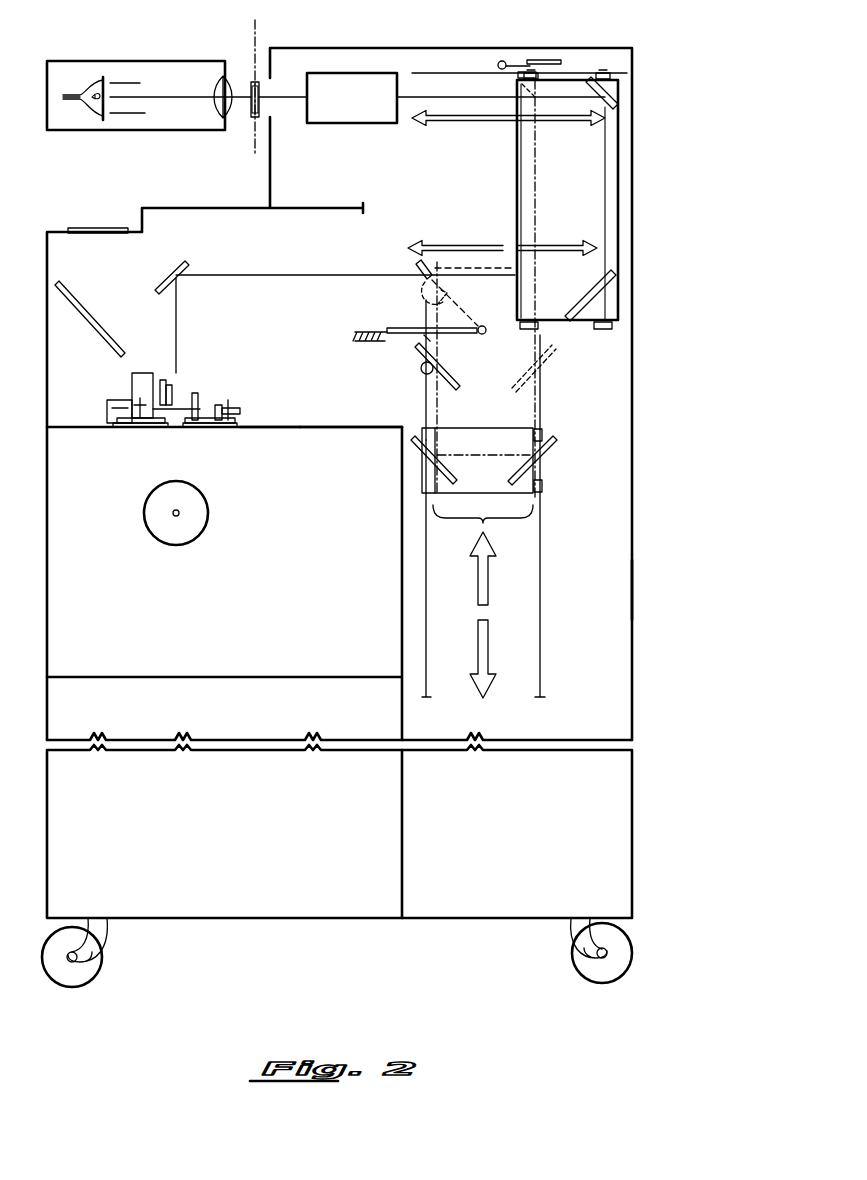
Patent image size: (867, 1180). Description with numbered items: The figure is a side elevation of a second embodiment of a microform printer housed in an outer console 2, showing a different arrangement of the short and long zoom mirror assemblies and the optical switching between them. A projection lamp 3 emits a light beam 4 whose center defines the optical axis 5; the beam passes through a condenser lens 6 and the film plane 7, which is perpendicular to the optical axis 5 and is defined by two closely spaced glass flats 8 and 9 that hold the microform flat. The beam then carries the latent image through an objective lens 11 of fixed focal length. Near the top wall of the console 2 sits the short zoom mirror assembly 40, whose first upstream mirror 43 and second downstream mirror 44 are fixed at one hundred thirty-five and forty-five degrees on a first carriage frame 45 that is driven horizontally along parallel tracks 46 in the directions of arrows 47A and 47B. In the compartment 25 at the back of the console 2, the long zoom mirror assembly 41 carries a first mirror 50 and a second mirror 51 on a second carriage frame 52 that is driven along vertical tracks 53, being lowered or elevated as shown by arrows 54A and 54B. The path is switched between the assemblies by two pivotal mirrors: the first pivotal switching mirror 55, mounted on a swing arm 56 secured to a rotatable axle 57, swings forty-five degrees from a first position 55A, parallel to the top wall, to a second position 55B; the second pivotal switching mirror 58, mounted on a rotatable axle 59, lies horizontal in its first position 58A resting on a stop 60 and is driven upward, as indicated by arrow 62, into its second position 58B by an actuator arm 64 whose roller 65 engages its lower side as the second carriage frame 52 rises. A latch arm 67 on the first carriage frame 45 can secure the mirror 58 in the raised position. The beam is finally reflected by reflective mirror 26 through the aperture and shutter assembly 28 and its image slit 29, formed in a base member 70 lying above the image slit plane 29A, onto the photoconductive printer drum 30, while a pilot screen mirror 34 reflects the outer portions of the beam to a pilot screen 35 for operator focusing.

The console 2 is at (632, 684).
The projection lamp 3 is at (103, 80).
The light beam 4 is at (129, 108).
The optical axis 5 is at (183, 97).
The condenser lens 6 is at (218, 86).
The film plane 7 is at (258, 28).
The glass flat 8 is at (246, 108).
The glass flat 9 is at (262, 108).
The objective lens 11 is at (356, 125).
The compartment 25 is at (632, 585).
The reflective mirror 26 is at (160, 272).
The aperture and shutter assembly 28 is at (208, 380).
The image slit 29 is at (185, 430).
The image slit plane 29A is at (273, 430).
The photoconductive printer drum 30 is at (210, 513).
The pilot screen mirror 34 is at (100, 340).
The pilot screen 35 is at (93, 228).
The short zoom mirror assembly 40 is at (642, 175).
The long zoom mirror assembly 41 is at (556, 395).
The first upstream mirror 43 is at (618, 88).
The second downstream mirror 44 is at (615, 300).
The first carriage frame 45 is at (612, 212).
The tracks 46 is at (578, 72).
The arrow 47A is at (440, 123).
The arrow 47B is at (572, 123).
The first mirror 50 is at (555, 452).
The second mirror 51 is at (412, 452).
The second carriage frame 52 is at (538, 490).
The tracks 53 is at (541, 612).
The arrow 54A is at (488, 580).
The arrow 54B is at (488, 636).
The first pivotal switching mirror 55 is at (534, 54).
The first position 55A is at (547, 58).
The second position 55B is at (515, 88).
The swing arm 56 is at (512, 64).
The rotatable axle 57 is at (497, 65).
The second pivotal switching mirror 58 is at (405, 260).
The first position 58A is at (392, 342).
The second position 58B is at (466, 290).
The rotatable axle 59 is at (486, 334).
The stop 60 is at (355, 338).
The arrow 62 is at (428, 303).
The actuator arm 64 is at (422, 405).
The roller 65 is at (421, 370).
The latch arm 67 is at (460, 250).
The base member 70 is at (318, 430).